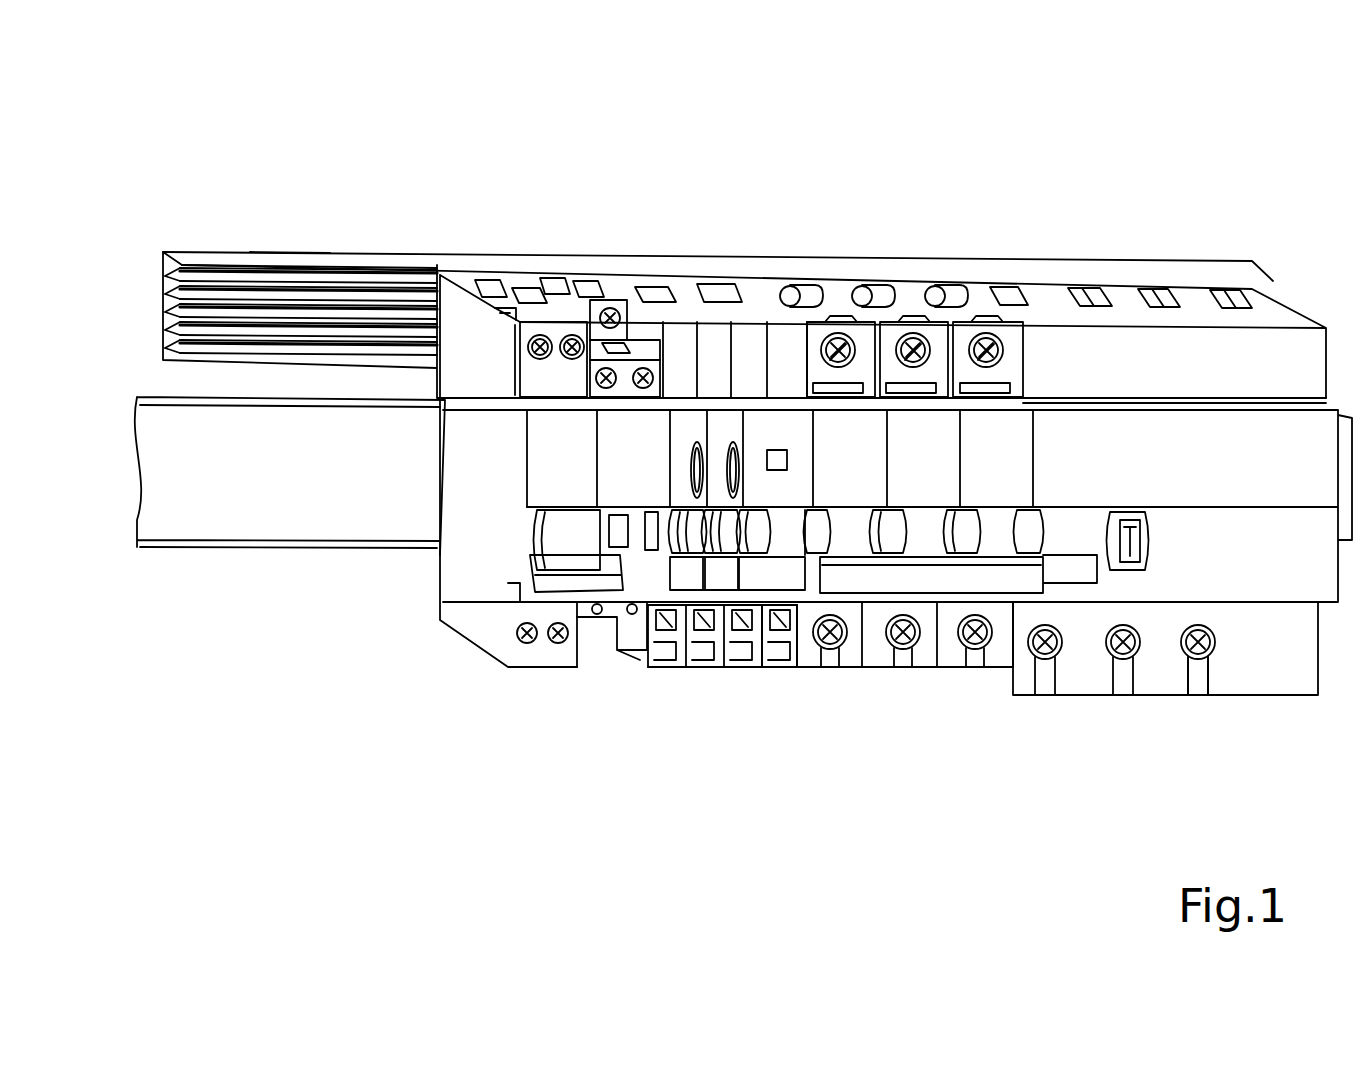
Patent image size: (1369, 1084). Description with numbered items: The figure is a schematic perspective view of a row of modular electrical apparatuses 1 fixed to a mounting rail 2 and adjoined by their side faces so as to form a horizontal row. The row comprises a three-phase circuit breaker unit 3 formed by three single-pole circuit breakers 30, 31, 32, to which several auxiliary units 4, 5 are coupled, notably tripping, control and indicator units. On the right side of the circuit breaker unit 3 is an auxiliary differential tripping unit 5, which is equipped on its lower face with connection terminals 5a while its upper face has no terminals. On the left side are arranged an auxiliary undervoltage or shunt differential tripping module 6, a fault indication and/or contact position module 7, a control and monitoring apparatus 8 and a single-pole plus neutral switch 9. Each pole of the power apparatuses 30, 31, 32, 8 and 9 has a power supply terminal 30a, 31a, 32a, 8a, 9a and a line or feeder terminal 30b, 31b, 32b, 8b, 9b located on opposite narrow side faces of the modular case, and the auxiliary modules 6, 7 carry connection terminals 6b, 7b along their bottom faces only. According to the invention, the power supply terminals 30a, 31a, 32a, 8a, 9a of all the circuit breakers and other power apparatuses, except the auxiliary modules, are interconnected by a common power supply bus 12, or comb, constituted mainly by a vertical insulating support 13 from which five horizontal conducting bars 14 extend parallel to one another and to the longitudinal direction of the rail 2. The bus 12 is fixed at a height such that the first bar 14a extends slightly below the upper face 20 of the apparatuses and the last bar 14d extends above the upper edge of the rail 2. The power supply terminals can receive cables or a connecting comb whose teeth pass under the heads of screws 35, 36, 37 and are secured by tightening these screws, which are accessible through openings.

The electrical apparatuses 1 is at (1040, 300).
The mounting rail 2 is at (310, 487).
The three-phase circuit breaker unit 3 is at (757, 278).
The auxiliary units 4 is at (797, 710).
The auxiliary differential tripping unit 5 is at (1317, 722).
The connection terminals 5a is at (1215, 655).
The auxiliary undervoltage or shunt differential tripping module 6 is at (692, 290).
The connection terminals 6b is at (774, 668).
The fault indication and/or contact position module 7 is at (645, 290).
The connection terminals 7b is at (660, 668).
The control and monitoring apparatus 8 is at (580, 288).
The power supply terminal 8a is at (550, 280).
The line or feeder terminal 8b is at (606, 640).
The single-pole plus neutral switch 9 is at (513, 280).
The power supply terminal 9a is at (490, 272).
The line or feeder terminal 9b is at (522, 648).
The common power supply bus 12 is at (282, 232).
The vertical insulating support 13 is at (163, 258).
The horizontal conducting bars 14 is at (232, 283).
The first bar 14a is at (370, 272).
The last bar 14d is at (220, 364).
The upper face 20 is at (452, 272).
The single-pole circuit breaker 30 is at (790, 303).
The power supply terminal 30a is at (810, 275).
The line or feeder terminal 30b is at (832, 650).
The single-pole circuit breaker 31 is at (870, 275).
The power supply terminal 31a is at (895, 282).
The line or feeder terminal 31b is at (912, 650).
The single-pole circuit breaker 32 is at (950, 285).
The power supply terminal 32a is at (973, 283).
The line or feeder terminal 32b is at (985, 650).
The screw 35 is at (843, 355).
The screw 36 is at (918, 355).
The screw 37 is at (993, 356).